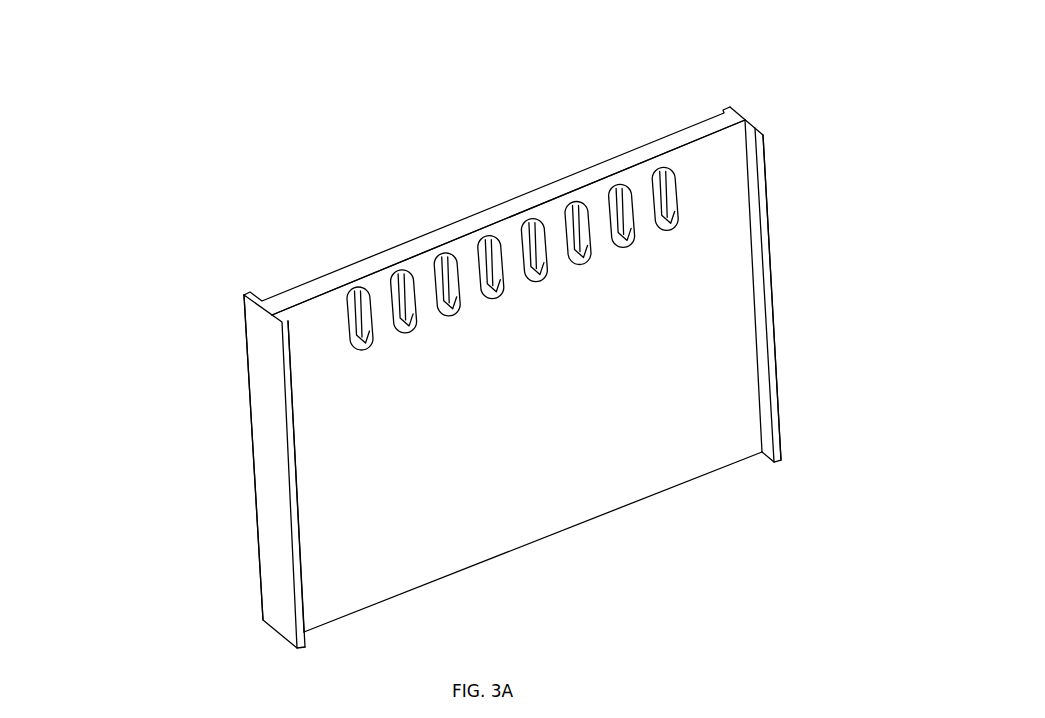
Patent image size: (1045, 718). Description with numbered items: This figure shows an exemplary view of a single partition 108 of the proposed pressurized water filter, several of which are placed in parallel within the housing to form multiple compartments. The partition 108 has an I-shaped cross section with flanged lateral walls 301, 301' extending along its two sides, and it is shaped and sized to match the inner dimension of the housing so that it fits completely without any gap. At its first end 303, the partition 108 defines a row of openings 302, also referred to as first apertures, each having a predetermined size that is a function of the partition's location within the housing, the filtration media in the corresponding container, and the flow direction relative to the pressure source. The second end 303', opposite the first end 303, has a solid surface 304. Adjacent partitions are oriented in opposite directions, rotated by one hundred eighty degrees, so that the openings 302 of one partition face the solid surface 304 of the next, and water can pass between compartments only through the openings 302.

The partition 108 is at (126, 46).
The flanged lateral wall 301 is at (827, 284).
The flanged lateral wall 301' is at (206, 471).
The opening 302 is at (582, 236).
The first end 303 is at (494, 211).
The second end 303' is at (533, 542).
The solid surface 304 is at (572, 488).